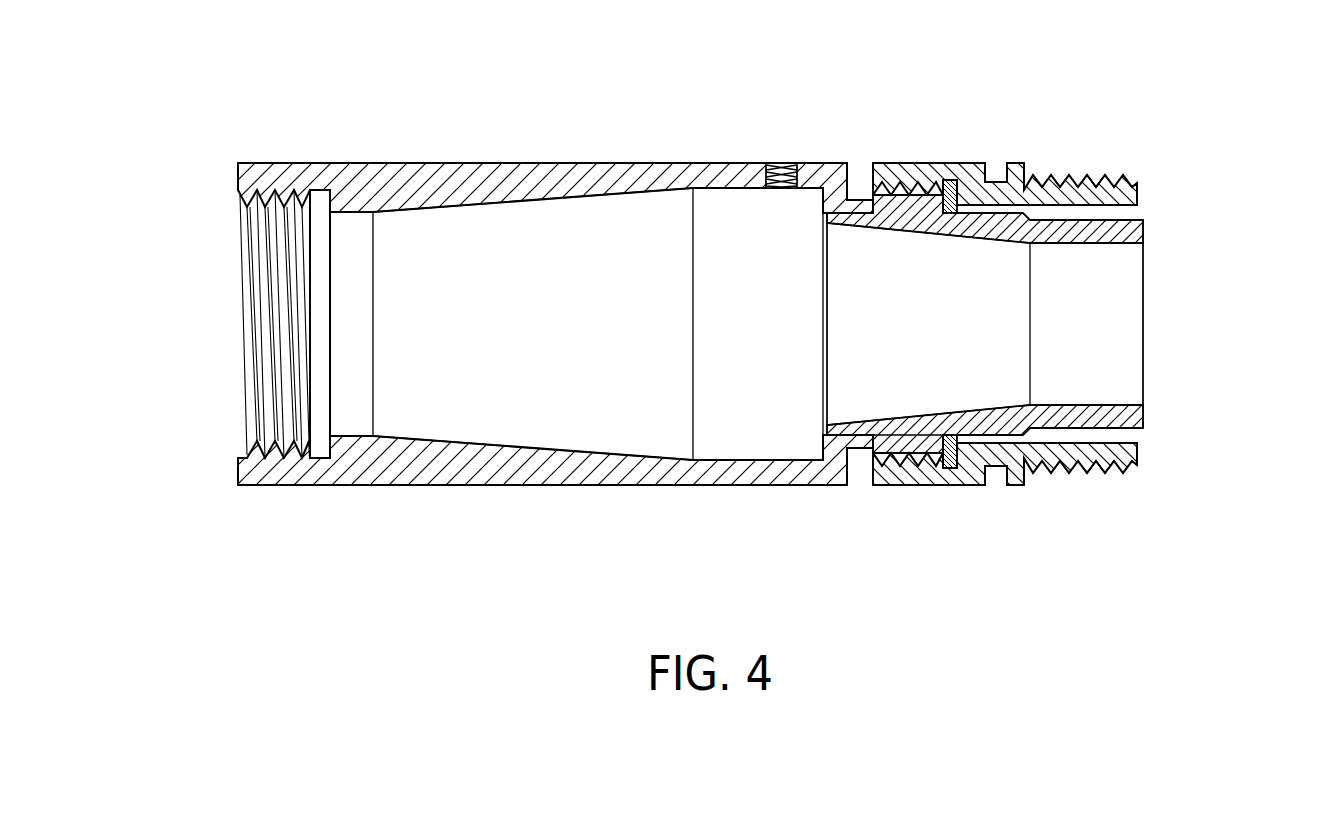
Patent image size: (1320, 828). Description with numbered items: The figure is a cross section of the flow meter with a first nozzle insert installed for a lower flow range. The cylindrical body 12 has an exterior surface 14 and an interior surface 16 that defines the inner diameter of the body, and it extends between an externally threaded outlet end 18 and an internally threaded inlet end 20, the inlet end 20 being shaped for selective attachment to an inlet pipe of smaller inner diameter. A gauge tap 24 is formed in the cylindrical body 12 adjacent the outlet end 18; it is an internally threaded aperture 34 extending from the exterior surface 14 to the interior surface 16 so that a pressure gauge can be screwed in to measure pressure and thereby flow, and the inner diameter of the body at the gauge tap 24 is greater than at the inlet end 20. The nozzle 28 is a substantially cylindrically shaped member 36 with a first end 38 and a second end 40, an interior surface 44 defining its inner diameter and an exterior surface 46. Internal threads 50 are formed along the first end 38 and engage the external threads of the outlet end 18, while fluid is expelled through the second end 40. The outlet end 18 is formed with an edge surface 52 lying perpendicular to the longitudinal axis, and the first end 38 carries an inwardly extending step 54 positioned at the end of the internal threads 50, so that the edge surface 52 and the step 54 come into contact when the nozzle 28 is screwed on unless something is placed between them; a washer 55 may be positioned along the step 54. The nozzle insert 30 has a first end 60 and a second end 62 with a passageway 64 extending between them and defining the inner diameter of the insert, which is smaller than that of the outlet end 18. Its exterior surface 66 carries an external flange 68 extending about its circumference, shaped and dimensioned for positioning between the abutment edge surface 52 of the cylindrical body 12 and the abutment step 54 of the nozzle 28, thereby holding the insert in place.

The cylindrical body 12 is at (662, 485).
The exterior surface 14 is at (491, 163).
The interior surface 16 is at (494, 210).
The outlet end 18 is at (918, 196).
The inlet end 20 is at (238, 168).
The gauge tap 24 is at (771, 163).
The nozzle 28 is at (1096, 178).
The nozzle insert 30 is at (862, 424).
The aperture 34 is at (777, 188).
The cylindrically shaped member 36 is at (1110, 455).
The first end 38 is at (930, 472).
The second end 40 is at (1138, 198).
The interior surface 44 is at (1040, 430).
The exterior surface 46 is at (1051, 177).
The internal threads 50 is at (900, 456).
The edge surface 52 is at (942, 180).
The step 54 is at (958, 198).
The washer 55 is at (955, 465).
The first end 60 is at (838, 436).
The second end 62 is at (1142, 412).
The passageway 64 is at (930, 338).
The exterior surface 66 is at (863, 212).
The flange 68 is at (944, 465).